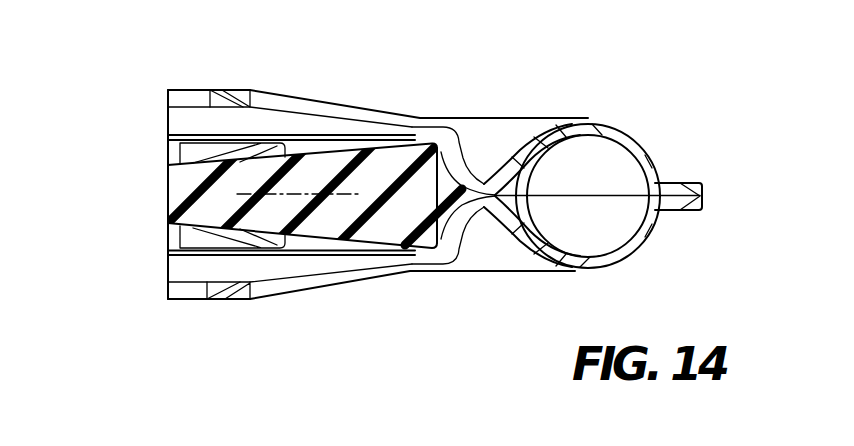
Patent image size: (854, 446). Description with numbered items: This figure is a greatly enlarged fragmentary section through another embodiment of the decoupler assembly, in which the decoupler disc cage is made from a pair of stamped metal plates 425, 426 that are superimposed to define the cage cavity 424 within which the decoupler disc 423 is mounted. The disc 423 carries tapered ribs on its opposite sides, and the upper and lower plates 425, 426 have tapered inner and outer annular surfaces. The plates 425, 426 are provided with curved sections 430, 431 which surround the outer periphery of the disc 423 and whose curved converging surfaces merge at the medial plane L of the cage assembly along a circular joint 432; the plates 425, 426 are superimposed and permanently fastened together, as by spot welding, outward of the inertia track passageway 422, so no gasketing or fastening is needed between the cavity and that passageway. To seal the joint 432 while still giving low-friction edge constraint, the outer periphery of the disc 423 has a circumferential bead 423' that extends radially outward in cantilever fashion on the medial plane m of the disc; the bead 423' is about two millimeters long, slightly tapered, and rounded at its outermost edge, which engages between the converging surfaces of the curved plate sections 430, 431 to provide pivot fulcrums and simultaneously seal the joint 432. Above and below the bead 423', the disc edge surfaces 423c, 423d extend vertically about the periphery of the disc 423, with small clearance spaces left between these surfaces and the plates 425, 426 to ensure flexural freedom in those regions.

The decoupler disc 423 is at (268, 195).
The decoupler disc cage cavity 424 is at (170, 272).
The lower cage plate 426 is at (402, 265).
The medial plane of the decoupler disc m is at (314, 190).
The circumferential bead 423' is at (403, 153).
The upper cage plate 425 is at (447, 138).
The upper decoupler disc edge surface 423c is at (478, 148).
The upper curved plate section 430 is at (515, 148).
The lower decoupler disc edge surface 423d is at (440, 262).
The lower curved plate section 431 is at (463, 250).
The circular joint 432 is at (487, 225).
The inertia track passageway 422 is at (607, 145).
The medial plane of the cage assembly L is at (638, 220).